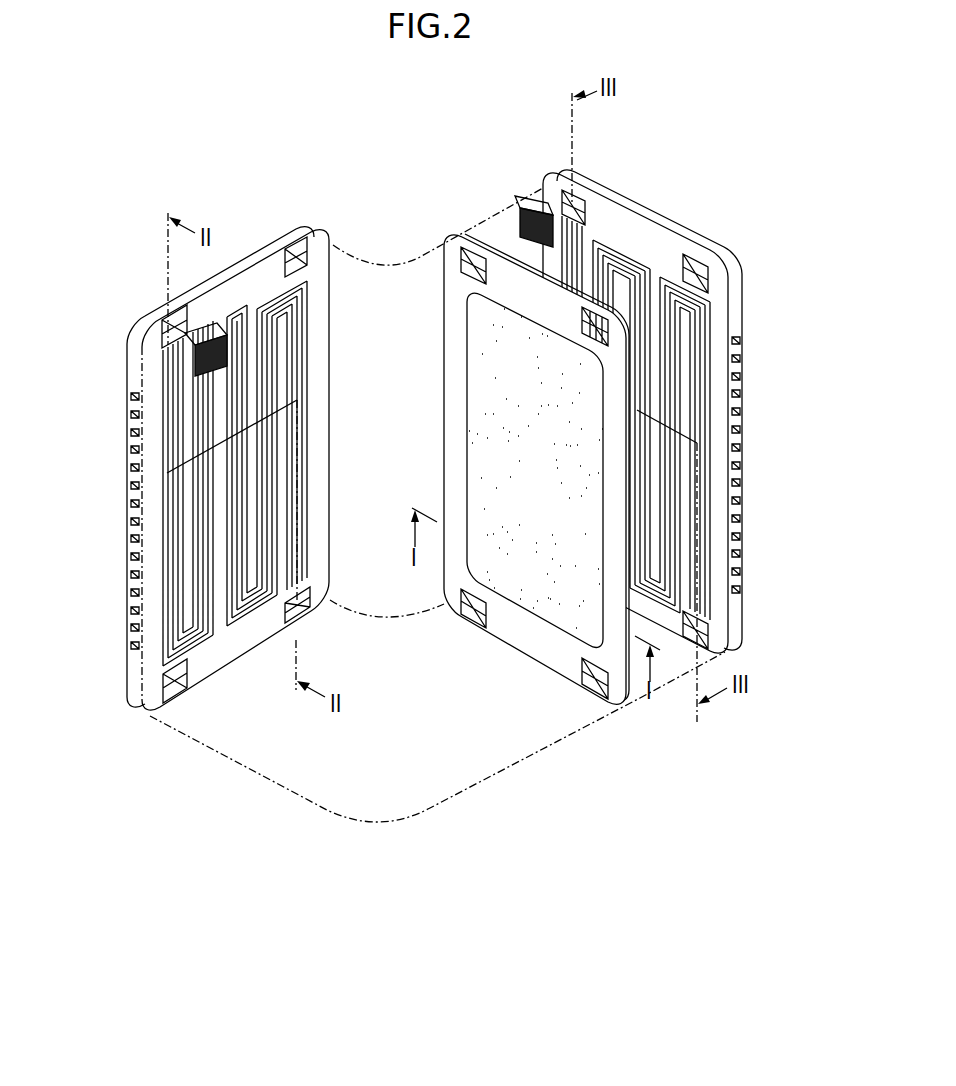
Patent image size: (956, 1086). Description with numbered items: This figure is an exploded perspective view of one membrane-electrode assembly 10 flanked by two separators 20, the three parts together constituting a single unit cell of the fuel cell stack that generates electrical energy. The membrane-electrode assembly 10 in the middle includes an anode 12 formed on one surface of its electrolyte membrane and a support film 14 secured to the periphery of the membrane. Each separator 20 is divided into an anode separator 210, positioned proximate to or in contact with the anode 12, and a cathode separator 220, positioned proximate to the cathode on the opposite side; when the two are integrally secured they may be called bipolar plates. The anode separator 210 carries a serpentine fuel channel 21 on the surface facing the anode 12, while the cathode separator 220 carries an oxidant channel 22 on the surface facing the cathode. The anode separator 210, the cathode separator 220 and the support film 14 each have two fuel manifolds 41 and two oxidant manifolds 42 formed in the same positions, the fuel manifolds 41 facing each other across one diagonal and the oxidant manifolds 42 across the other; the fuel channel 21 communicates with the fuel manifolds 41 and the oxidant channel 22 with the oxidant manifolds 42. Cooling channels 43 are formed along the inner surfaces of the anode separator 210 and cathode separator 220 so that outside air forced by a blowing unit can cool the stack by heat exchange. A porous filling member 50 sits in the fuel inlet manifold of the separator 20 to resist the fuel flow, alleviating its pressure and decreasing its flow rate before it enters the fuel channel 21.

The membrane-electrode assembly 10 is at (508, 437).
The anode 12 is at (478, 410).
The support film 14 is at (452, 357).
The separator 20 is at (432, 401).
The fuel channel 21 is at (320, 442).
The oxidant channel 22 is at (704, 430).
The fuel manifold 41 is at (694, 258).
The oxidant manifold 42 is at (574, 205).
The cooling channel 43 is at (740, 548).
The filling member 50 is at (528, 214).
The anode separator 210 is at (715, 250).
The cathode separator 220 is at (731, 302).